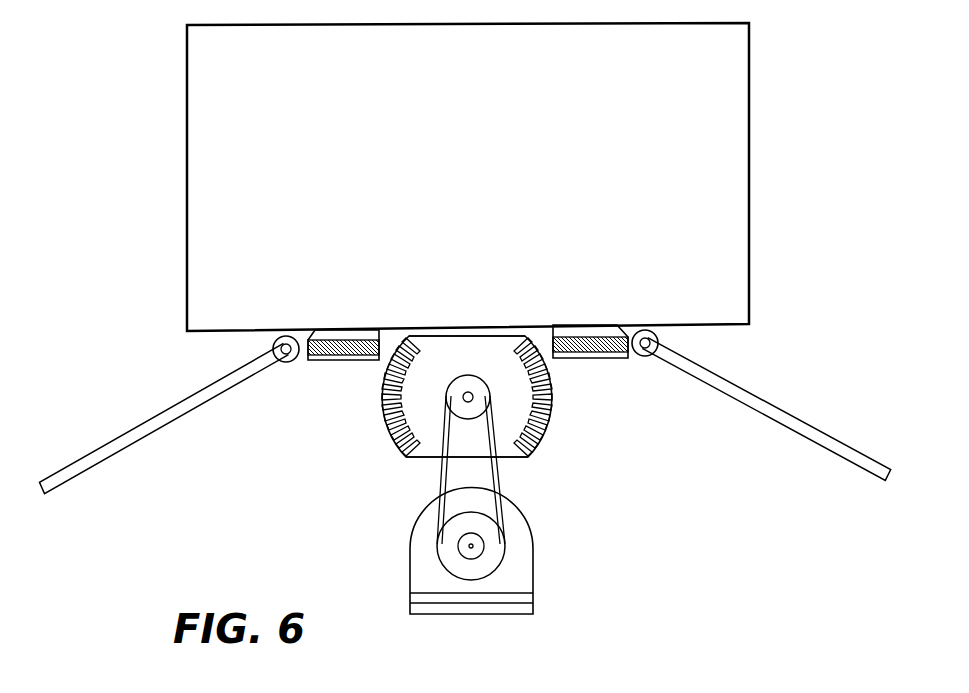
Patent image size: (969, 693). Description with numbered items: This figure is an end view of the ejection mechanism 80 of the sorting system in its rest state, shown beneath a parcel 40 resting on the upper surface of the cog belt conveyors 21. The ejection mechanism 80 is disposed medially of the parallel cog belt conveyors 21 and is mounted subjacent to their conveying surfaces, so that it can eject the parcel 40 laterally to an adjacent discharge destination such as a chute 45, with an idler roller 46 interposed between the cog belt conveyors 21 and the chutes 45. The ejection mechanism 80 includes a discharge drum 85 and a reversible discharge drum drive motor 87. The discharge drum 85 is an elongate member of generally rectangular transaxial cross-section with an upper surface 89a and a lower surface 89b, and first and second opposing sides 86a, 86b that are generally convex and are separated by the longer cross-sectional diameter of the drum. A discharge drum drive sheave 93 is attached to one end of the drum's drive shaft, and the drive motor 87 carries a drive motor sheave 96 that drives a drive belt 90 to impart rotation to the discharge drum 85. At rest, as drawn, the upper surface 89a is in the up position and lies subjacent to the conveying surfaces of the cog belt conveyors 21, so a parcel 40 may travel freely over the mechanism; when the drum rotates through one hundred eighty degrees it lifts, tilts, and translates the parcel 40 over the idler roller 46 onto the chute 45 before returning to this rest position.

The parcel 40 is at (749, 88).
The cog belt conveyors 21 is at (332, 360).
The chute 45 is at (160, 422).
The idler roller 46 is at (658, 342).
The ejection mechanism 80 is at (480, 446).
The discharge drum 85 is at (548, 432).
The first opposing side 86a is at (386, 423).
The second opposing side 86b is at (548, 382).
The upper surface 89a is at (492, 336).
The lower surface 89b is at (516, 459).
The drive belt 90 is at (440, 483).
The discharge drum drive sheave 93 is at (465, 382).
The discharge drum drive motor 87 is at (410, 567).
The drive motor sheave 96 is at (505, 568).